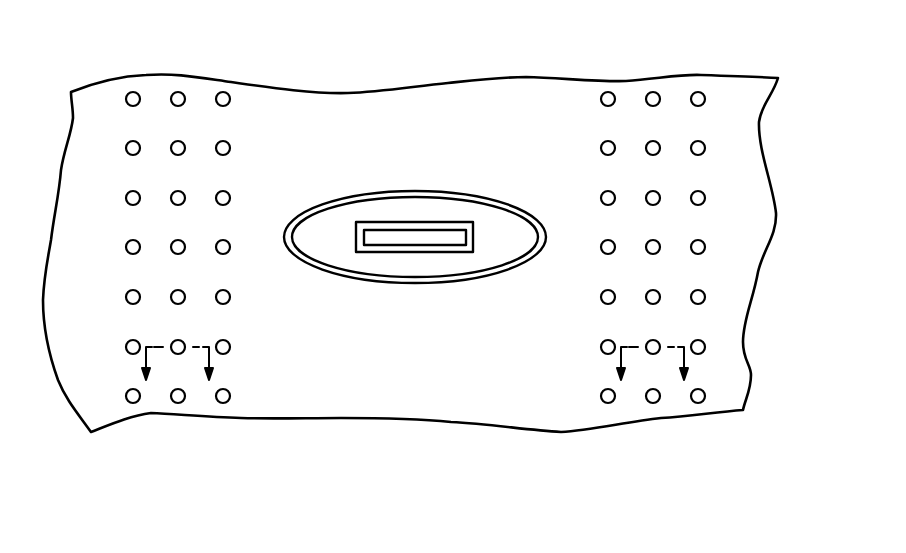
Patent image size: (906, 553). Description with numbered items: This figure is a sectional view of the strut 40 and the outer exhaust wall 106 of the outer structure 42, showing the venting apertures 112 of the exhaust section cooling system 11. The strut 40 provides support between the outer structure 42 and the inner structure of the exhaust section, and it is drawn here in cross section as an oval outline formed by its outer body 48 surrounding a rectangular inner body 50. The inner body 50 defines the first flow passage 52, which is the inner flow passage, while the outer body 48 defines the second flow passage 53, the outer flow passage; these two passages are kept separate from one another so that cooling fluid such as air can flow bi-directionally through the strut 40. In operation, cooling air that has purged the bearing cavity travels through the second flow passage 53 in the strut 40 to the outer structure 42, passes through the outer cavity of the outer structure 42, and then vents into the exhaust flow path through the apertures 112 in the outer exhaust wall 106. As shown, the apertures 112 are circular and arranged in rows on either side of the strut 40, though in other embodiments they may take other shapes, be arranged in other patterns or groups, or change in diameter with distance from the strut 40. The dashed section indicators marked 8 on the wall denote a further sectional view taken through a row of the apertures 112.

The exhaust section cooling system 11 is at (565, 124).
The strut 40 is at (352, 356).
The outer structure 42 is at (380, 91).
The outer exhaust wall 106 is at (530, 100).
The apertures 112 is at (216, 194).
The outer body 48 is at (325, 204).
The second flow passage 53 is at (318, 248).
The inner body 50 is at (388, 248).
The first flow passage 52 is at (442, 238).
The section line 8- 8 is at (414, 368).